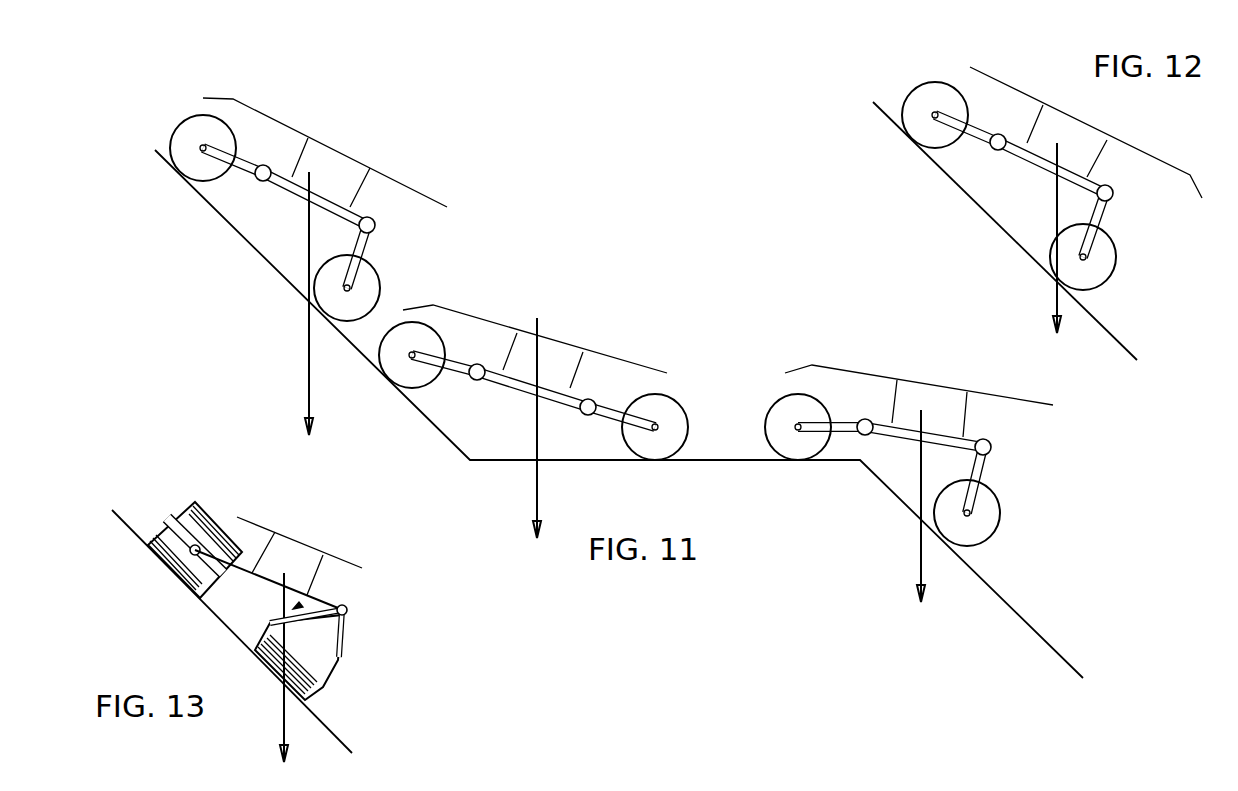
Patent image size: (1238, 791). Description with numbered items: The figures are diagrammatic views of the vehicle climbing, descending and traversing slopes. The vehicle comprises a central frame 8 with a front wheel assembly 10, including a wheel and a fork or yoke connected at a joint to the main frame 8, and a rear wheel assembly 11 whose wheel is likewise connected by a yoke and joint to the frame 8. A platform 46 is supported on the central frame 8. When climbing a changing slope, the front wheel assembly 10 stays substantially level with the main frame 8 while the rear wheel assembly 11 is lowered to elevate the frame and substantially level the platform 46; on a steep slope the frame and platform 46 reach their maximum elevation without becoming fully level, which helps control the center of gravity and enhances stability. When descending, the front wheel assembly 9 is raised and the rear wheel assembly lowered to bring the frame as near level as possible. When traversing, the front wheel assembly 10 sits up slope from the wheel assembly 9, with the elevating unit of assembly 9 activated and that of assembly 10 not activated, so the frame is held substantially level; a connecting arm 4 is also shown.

In FIG. 13, the frame arm 4 is at (262, 572).
In FIG. 11, the central frame 8 is at (292, 187).
In FIG. 12, the central frame 8 is at (1030, 157).
In FIG. 12, the front wheel assembly 9 is at (1143, 247).
In FIG. 13, the front wheel assembly 9 is at (368, 630).
In FIG. 11, the front wheel assembly 10 is at (175, 103).
In FIG. 12, the front wheel assembly 10 is at (888, 77).
In FIG. 13, the front wheel assembly 10 is at (195, 490).
In FIG. 11, the rear wheel assembly 11 is at (390, 255).
In FIG. 11, the platform 46 is at (327, 147).
In FIG. 12, the platform 46 is at (1098, 128).
In FIG. 13, the platform 46 is at (297, 540).